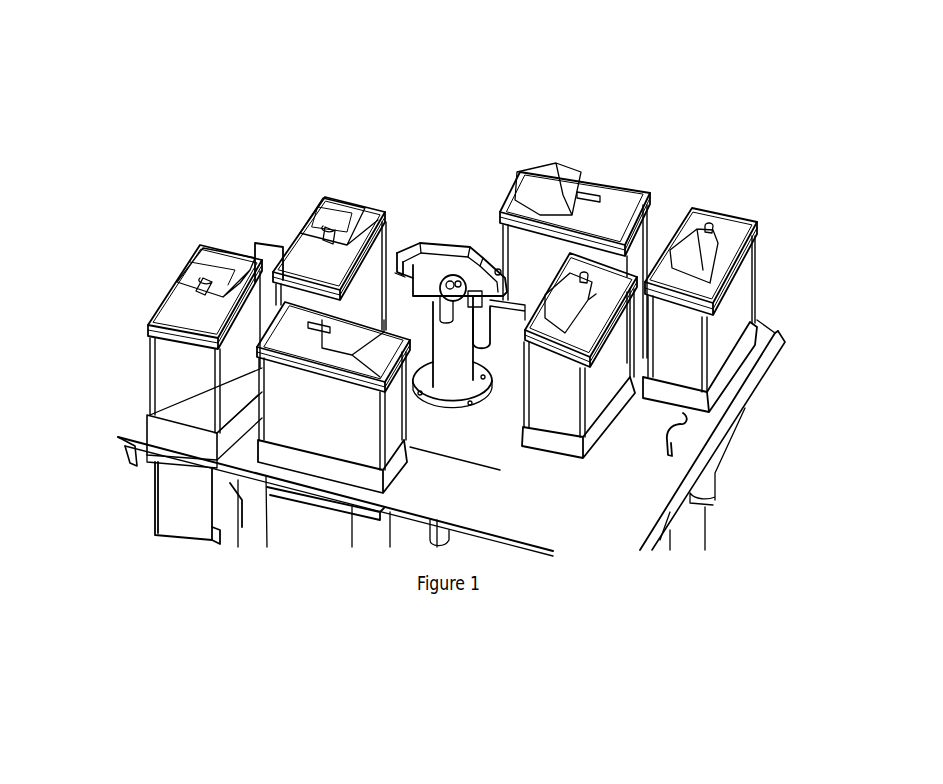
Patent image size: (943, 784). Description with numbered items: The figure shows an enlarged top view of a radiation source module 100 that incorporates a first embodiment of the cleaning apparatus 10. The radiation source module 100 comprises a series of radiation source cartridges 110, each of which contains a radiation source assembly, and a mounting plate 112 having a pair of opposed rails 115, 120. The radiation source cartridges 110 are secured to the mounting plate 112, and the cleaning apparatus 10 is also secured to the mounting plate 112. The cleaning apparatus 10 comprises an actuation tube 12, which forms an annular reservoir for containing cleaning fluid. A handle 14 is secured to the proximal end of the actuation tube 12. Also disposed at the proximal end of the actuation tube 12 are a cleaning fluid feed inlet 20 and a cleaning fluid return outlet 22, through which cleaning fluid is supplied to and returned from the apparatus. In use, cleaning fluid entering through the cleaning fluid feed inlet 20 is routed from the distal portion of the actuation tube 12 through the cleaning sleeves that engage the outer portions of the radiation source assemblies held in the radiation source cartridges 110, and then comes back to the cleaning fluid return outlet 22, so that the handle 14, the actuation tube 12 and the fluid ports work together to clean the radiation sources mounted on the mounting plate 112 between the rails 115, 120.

The radiation source module 100 is at (386, 100).
The cleaning apparatus 10 is at (462, 232).
The actuation tube 12 is at (448, 546).
The handle 14 is at (482, 252).
The cleaning fluid feed inlet 20 is at (440, 293).
The cleaning fluid return outlet 22 is at (455, 306).
The radiation source cartridges 110 is at (303, 247).
The mounting plate 112 is at (470, 488).
The rail 115 is at (130, 447).
The rail 120 is at (778, 343).